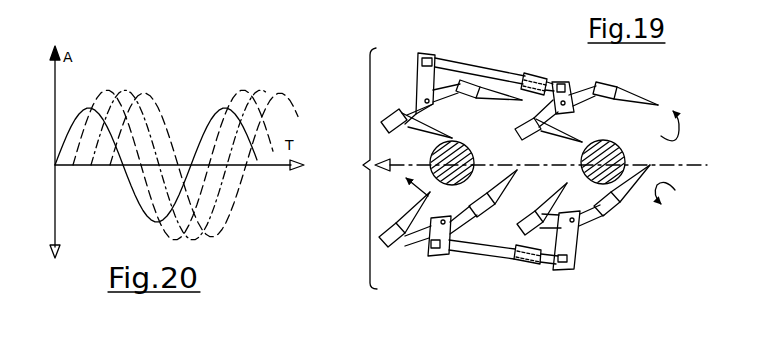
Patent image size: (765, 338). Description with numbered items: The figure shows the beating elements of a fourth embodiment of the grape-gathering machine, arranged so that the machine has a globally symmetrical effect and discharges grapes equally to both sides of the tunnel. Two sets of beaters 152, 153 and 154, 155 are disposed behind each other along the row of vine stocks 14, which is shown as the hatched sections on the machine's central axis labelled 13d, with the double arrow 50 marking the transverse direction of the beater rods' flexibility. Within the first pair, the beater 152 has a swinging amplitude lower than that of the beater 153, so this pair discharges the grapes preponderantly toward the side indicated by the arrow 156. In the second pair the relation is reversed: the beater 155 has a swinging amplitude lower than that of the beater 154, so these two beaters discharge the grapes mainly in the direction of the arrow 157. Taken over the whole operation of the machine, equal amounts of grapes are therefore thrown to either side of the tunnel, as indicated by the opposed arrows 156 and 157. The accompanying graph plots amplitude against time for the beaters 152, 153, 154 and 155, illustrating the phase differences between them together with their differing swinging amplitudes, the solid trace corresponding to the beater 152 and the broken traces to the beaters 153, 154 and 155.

In FIG. 19, the axis / bracket of pen carriage 13d is at (358, 171).
In FIG. 19, the row of vine stocks 14 is at (474, 156).
In FIG. 19, the double arrow 50 is at (394, 174).
In FIG. 20, the beater 152 is at (68, 121).
In FIG. 19, the beater 152 is at (414, 155).
In FIG. 20, the beater 153 is at (143, 93).
In FIG. 19, the beater 153 is at (458, 217).
In FIG. 20, the beater 154 is at (96, 91).
In FIG. 19, the beater 154 is at (558, 121).
In FIG. 20, the beater 155 is at (166, 134).
In FIG. 19, the beater 155 is at (587, 212).
In FIG. 19, the arrow 156 is at (685, 126).
In FIG. 19, the arrow 157 is at (681, 193).